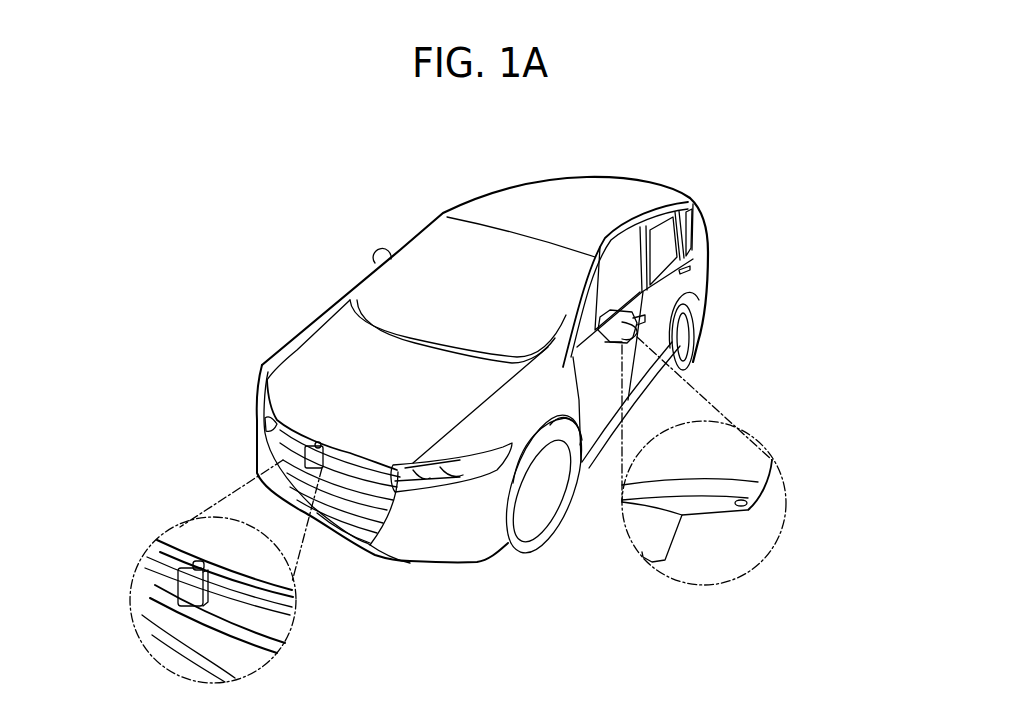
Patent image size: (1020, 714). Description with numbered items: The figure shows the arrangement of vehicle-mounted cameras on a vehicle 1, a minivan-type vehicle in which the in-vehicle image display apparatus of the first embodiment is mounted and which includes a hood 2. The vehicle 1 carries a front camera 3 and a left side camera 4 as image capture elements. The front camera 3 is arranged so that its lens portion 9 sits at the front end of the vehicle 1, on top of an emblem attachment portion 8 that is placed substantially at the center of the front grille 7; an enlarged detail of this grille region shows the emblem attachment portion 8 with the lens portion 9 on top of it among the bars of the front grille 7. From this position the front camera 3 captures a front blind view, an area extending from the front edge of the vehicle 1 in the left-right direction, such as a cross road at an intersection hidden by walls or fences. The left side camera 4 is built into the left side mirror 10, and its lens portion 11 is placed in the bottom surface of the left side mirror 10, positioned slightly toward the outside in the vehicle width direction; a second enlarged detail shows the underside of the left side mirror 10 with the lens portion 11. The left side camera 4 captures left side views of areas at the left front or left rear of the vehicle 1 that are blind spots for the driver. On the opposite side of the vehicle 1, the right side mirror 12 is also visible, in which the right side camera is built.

The vehicle 1 is at (567, 192).
The hood 2 is at (327, 350).
The right side mirror 12 is at (380, 250).
The left side mirror 10 is at (625, 315).
The front grille 7 is at (360, 483).
The lens portion 9 is at (200, 506).
The front camera 3 is at (190, 561).
The emblem attachment portion 8 is at (187, 585).
The lens portion 11 is at (799, 527).
The left side camera 4 is at (747, 507).